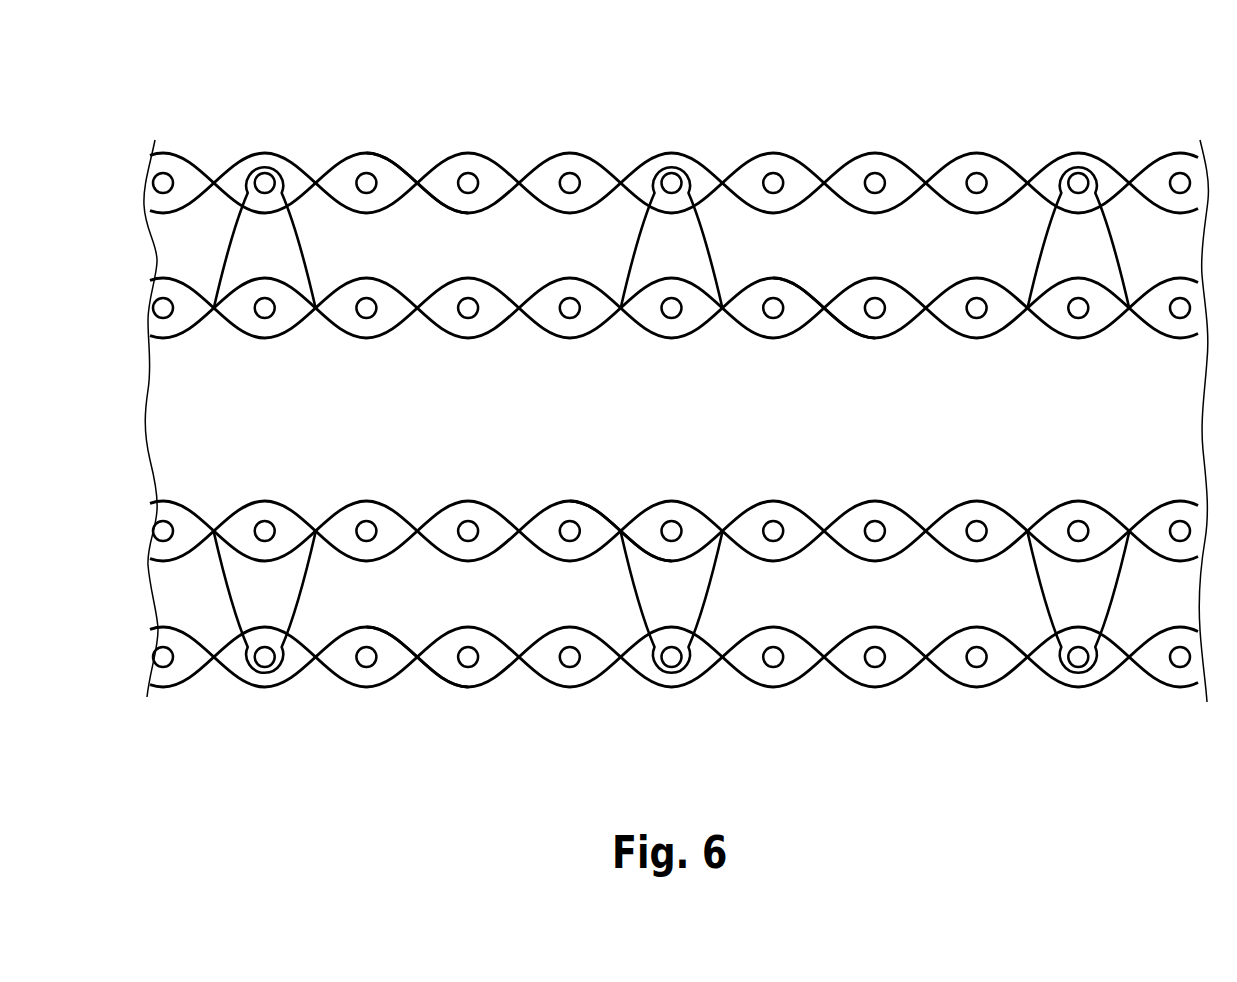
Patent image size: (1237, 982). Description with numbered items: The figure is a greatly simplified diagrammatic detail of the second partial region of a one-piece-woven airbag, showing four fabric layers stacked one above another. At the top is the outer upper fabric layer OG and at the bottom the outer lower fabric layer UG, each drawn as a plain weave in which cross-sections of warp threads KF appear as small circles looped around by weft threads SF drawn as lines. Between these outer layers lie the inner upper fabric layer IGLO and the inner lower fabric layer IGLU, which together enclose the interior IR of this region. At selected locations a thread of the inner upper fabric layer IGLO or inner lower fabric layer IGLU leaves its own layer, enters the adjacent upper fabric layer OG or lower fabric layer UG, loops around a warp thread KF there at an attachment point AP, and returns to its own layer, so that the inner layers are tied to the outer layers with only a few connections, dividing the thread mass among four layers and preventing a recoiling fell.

The attachment point AP is at (258, 140).
The warp thread KF is at (366, 180).
The weft thread SF is at (397, 163).
The upper fabric layer OG is at (495, 175).
The lower fabric layer UG is at (782, 678).
The inner upper fabric layer IGLO is at (480, 330).
The inner lower fabric layer IGLU is at (895, 520).
The interior IR is at (317, 418).